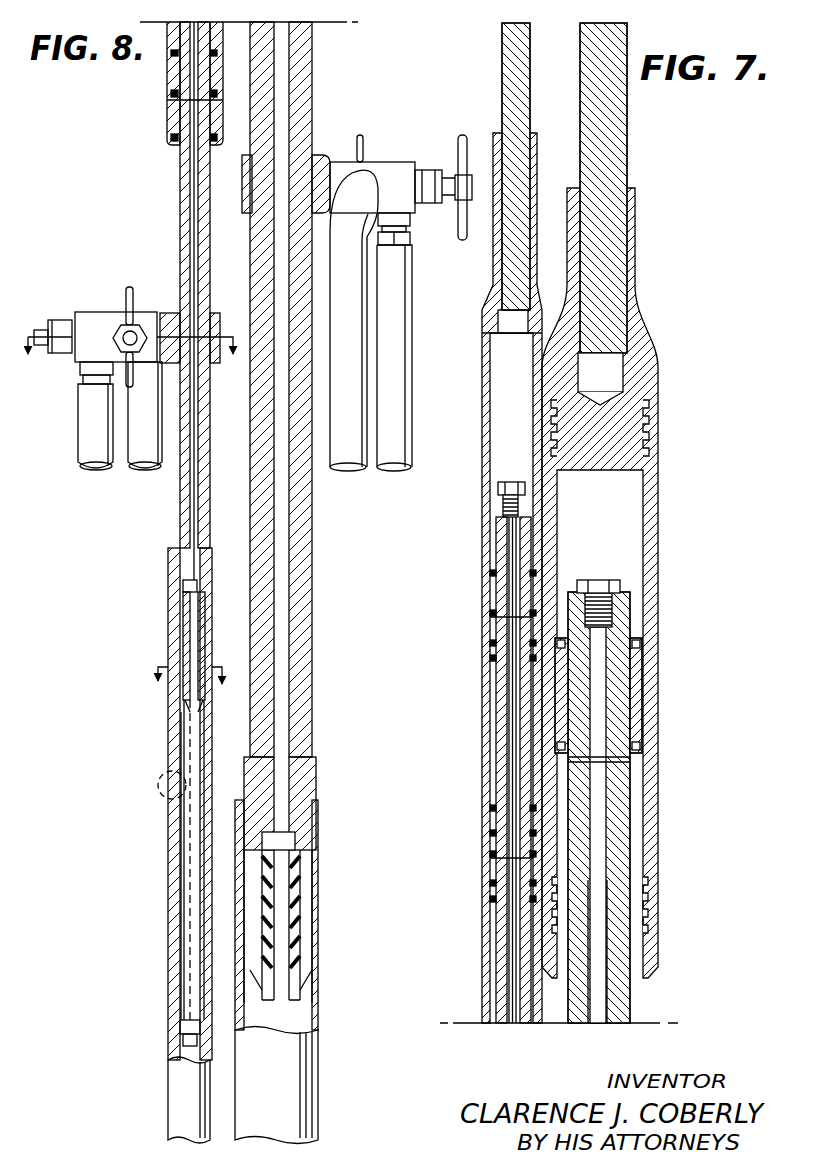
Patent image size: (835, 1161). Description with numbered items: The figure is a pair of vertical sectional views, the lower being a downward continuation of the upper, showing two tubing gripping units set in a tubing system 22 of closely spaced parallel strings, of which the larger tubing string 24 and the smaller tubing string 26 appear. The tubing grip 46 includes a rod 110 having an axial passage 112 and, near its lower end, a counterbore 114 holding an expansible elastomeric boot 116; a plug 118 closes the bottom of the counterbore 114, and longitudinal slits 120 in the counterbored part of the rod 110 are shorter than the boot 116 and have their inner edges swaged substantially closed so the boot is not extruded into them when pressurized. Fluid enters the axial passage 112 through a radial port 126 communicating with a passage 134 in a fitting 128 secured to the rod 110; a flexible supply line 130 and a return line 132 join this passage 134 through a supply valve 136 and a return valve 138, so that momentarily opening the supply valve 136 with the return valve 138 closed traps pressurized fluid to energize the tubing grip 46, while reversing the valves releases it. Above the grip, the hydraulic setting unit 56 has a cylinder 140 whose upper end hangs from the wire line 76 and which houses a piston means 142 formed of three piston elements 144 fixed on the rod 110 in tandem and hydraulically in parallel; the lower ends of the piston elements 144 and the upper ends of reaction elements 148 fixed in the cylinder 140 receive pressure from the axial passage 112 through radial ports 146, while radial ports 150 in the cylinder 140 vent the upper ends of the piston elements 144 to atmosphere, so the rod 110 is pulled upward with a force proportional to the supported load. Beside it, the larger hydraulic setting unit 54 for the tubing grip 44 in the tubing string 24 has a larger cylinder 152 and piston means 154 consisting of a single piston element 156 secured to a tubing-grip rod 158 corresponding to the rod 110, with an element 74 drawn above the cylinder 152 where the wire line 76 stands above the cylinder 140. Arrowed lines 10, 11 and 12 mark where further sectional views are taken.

In FIG. 8, the section line 10- 10 is at (132, 362).
In FIG. 8, the section line 11 is at (165, 782).
In FIG. 8, the section line 12- 12 is at (193, 692).
In FIG. 8, the tubing system 22 is at (321, 1058).
In FIG. 8, the tubing string 24 is at (318, 822).
In FIG. 8, the tubing string 26 is at (182, 1098).
In FIG. 8, the tubing grip 44 is at (300, 912).
In FIG. 8, the tubing grip 46 is at (172, 990).
In FIG. 7, the hydraulic setting unit 54 is at (660, 698).
In FIG. 8, the hydraulic setting unit 56 is at (166, 118).
In FIG. 7, the hydraulic setting unit 56 is at (480, 759).
In FIG. 7, the rod 74 is at (610, 115).
In FIG. 7, the wire line 76 is at (505, 70).
In FIG. 8, the rod 110 is at (180, 517).
In FIG. 7, the rod 110 is at (498, 965).
In FIG. 8, the axial passage 112 is at (194, 530).
In FIG. 7, the axial passage 112 is at (508, 925).
In FIG. 8, the counterbore 114 is at (187, 722).
In FIG. 8, the expansible elastomeric boot 116 is at (183, 706).
In FIG. 8, the plug 118 is at (185, 1036).
In FIG. 8, the longitudinal slits 120 is at (180, 748).
In FIG. 8, the radial port 126 is at (222, 335).
In FIG. 8, the fitting 128 is at (92, 320).
In FIG. 8, the supply line 130 is at (143, 470).
In FIG. 8, the return line 132 is at (90, 439).
In FIG. 8, the passage 134 is at (172, 313).
In FIG. 8, the supply valve 136 is at (147, 268).
In FIG. 8, the return valve 138 is at (50, 320).
In FIG. 8, the cylinder 140 is at (168, 66).
In FIG. 7, the cylinder 140 is at (482, 500).
In FIG. 7, the piston means 142 is at (488, 843).
In FIG. 8, the piston elements 144 is at (174, 80).
In FIG. 7, the piston elements 144 is at (489, 595).
In FIG. 8, the radial ports 146 is at (175, 100).
In FIG. 7, the radial ports 146 is at (492, 617).
In FIG. 8, the reaction elements 148 is at (173, 140).
In FIG. 7, the reaction elements 148 is at (489, 640).
In FIG. 7, the radial ports 150 is at (488, 338).
In FIG. 7, the cylinder 152 is at (657, 505).
In FIG. 7, the piston means 154 is at (645, 718).
In FIG. 7, the piston element 156 is at (618, 673).
In FIG. 8, the tubing-grip rod 158 is at (296, 556).
In FIG. 7, the tubing-grip rod 158 is at (615, 905).